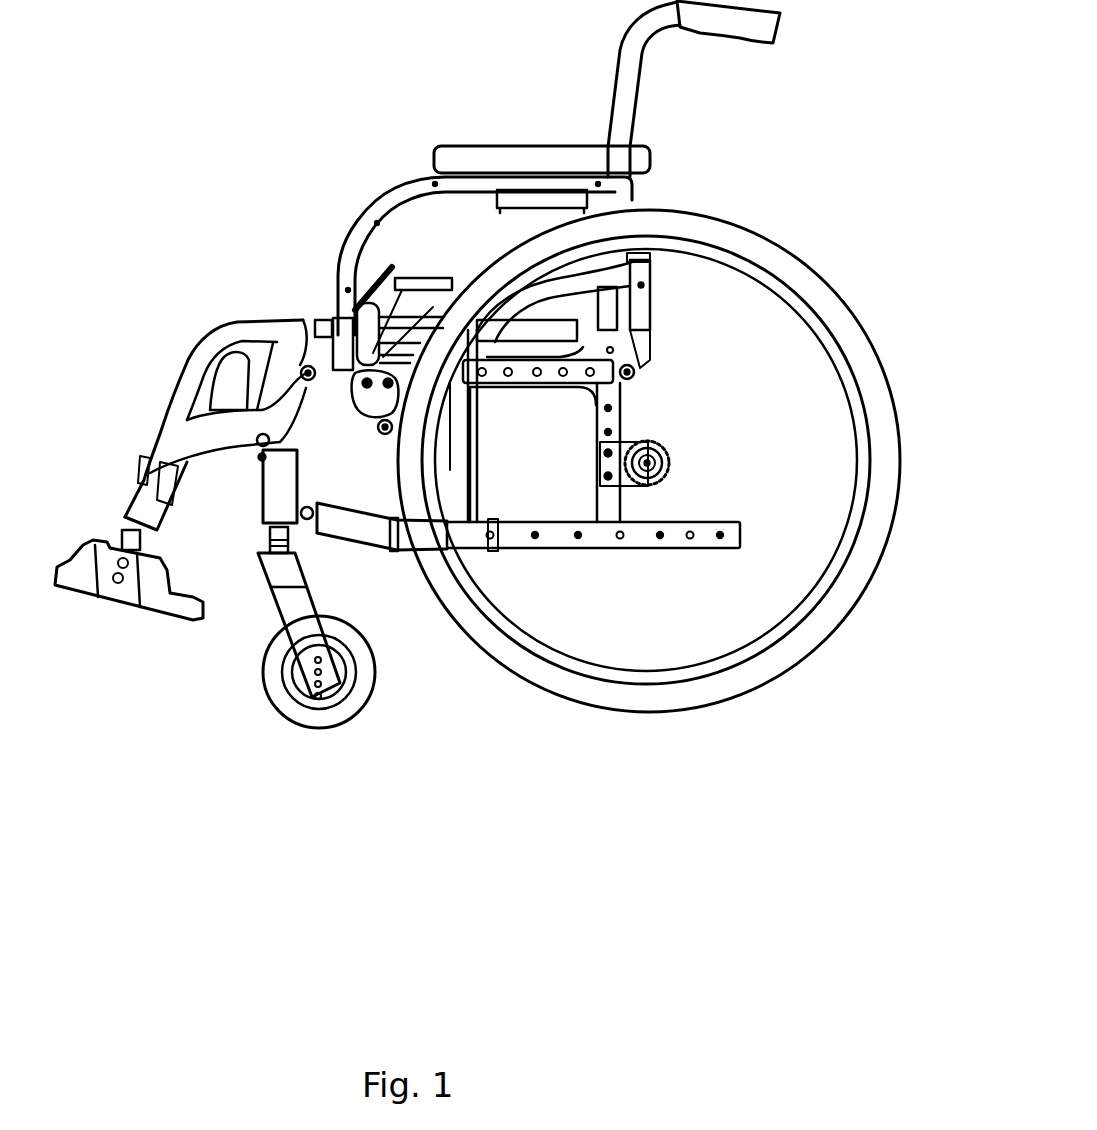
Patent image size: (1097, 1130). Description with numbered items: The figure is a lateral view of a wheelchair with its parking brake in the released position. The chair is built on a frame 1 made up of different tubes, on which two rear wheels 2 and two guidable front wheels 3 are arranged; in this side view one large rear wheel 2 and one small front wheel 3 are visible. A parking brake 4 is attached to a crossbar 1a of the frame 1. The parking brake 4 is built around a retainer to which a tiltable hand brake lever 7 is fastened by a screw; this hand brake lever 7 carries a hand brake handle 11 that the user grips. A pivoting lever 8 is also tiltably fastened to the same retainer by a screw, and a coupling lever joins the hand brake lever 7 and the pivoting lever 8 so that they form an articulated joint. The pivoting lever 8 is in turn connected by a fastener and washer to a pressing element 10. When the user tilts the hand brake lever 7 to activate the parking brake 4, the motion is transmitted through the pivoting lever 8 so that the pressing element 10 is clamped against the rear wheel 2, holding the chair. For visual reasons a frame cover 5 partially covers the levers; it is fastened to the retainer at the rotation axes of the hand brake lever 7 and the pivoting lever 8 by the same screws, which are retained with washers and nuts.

The frame 1 is at (374, 182).
The crossbar 1a is at (323, 365).
The rear wheel 2 is at (735, 238).
The front wheel 3 is at (352, 703).
The parking brake 4 is at (362, 440).
The frame cover 5 is at (308, 366).
The hand brake lever 7 is at (419, 405).
The pivoting lever 8 is at (345, 403).
The pressing element 10 is at (393, 428).
The hand brake handle 11 is at (340, 297).